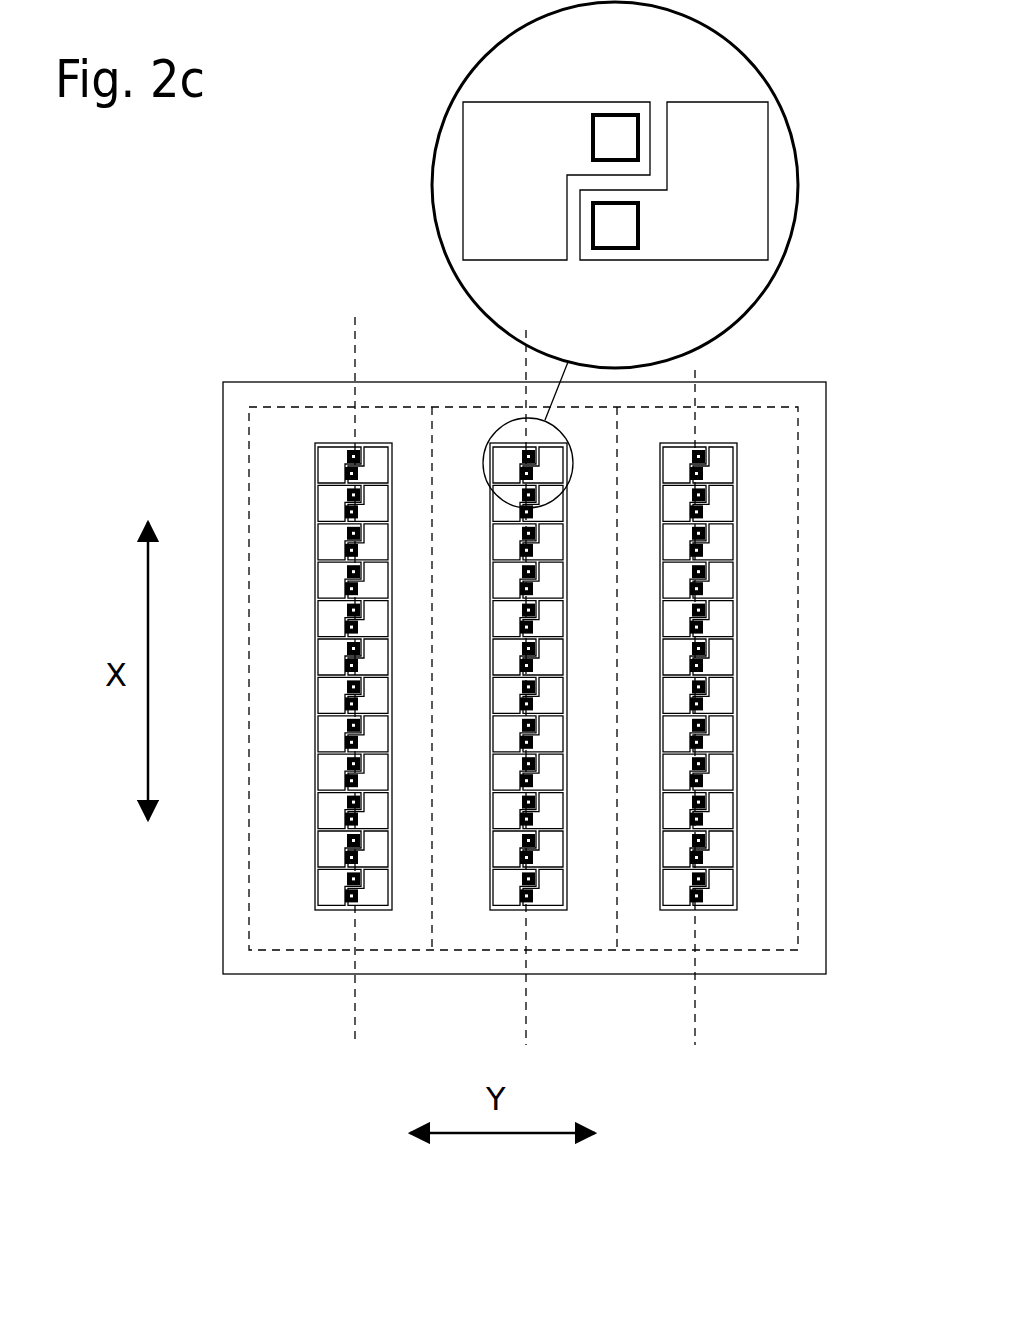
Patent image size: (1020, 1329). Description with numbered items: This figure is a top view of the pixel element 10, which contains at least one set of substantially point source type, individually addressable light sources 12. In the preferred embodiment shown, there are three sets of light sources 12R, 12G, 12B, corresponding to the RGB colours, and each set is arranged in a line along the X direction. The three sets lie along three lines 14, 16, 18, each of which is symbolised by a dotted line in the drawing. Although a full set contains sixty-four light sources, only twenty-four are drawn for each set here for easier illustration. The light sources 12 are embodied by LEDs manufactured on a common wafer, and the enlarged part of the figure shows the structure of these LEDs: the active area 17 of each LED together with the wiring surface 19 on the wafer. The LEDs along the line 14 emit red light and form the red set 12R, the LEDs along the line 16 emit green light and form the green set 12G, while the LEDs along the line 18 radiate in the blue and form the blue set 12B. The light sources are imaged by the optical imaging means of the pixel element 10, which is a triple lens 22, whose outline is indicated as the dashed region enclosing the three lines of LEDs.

The pixel element 10 is at (828, 998).
The light source 12 is at (618, 191).
The red light source set 12R is at (298, 562).
The green light source set 12G is at (542, 925).
The blue light source set 12B is at (750, 650).
The line 14 is at (357, 1000).
The line 16 is at (527, 985).
The line 18 is at (697, 987).
The active area 17 is at (612, 133).
The wiring surface 19 is at (508, 187).
The triple lens 22 is at (327, 405).